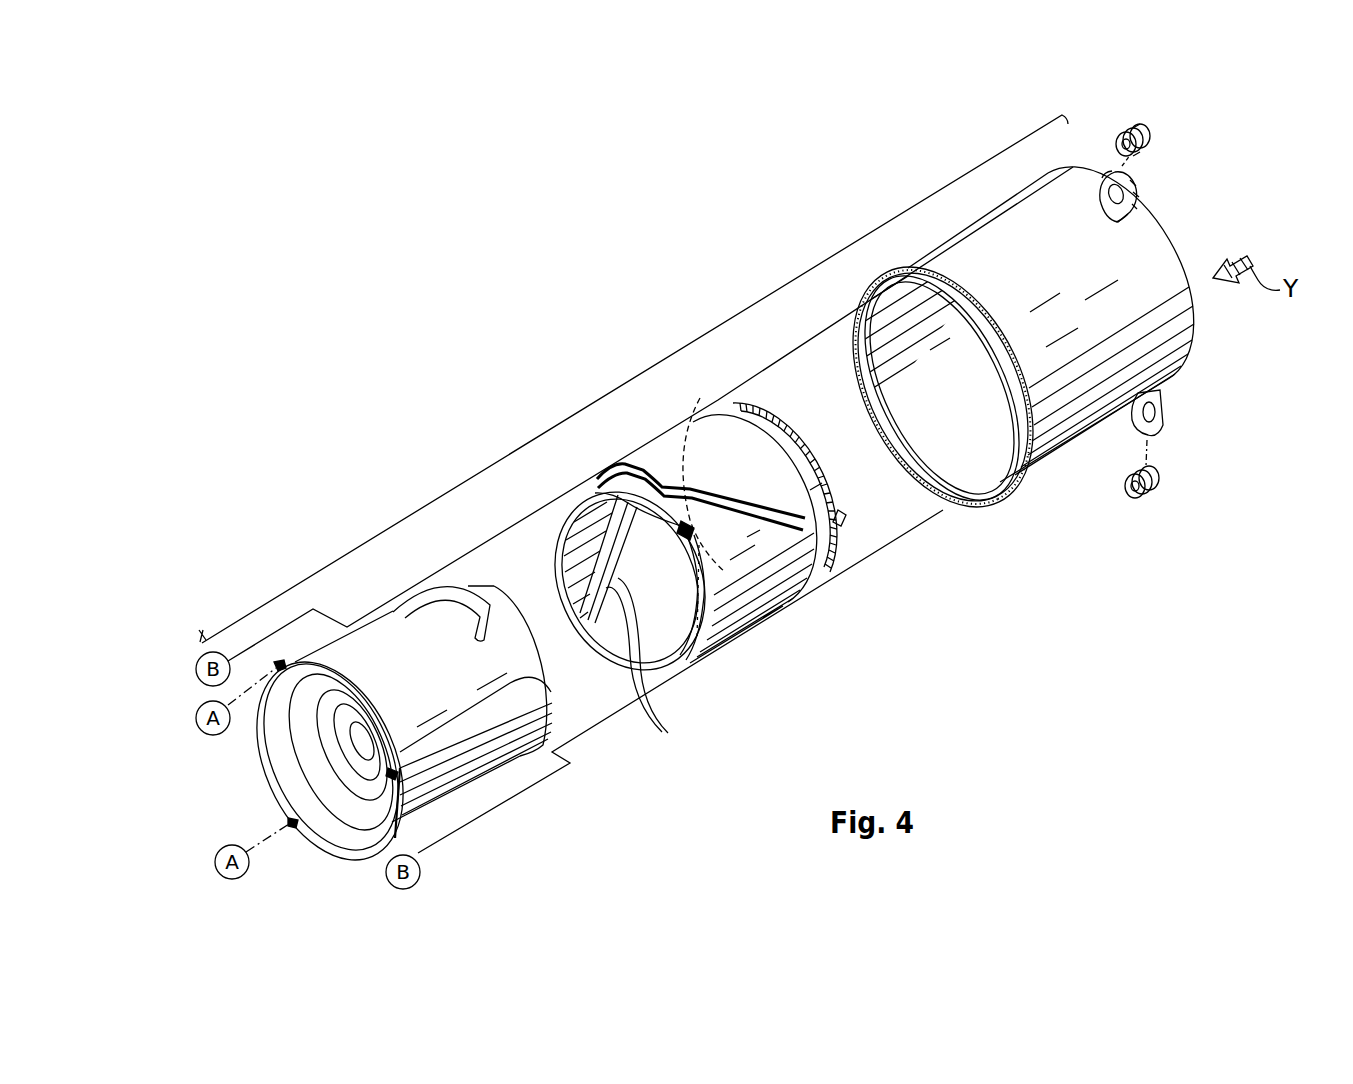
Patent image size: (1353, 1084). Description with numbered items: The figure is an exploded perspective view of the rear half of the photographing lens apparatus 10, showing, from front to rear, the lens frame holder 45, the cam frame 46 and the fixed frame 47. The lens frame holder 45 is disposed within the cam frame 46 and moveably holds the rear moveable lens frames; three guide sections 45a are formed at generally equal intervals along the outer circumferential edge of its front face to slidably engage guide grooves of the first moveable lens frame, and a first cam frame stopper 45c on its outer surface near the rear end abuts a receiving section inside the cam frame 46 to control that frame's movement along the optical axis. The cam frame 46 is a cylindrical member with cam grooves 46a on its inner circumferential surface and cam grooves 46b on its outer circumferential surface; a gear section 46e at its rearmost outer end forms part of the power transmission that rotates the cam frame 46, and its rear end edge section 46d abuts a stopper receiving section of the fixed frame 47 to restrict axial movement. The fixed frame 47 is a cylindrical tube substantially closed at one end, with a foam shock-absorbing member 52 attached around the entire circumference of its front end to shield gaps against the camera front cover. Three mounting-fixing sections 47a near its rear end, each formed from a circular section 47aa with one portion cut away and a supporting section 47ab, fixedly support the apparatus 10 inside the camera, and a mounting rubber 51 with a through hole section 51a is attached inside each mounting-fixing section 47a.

The photographing lens apparatus 10 is at (552, 429).
The lens frame holder 45 is at (540, 667).
The guide sections 45a is at (283, 665).
The first cam frame stopper 45c is at (516, 578).
The cam frame 46 is at (762, 595).
The cam grooves 46a is at (657, 462).
The cam grooves 46b is at (663, 666).
The rear end edge section 46d is at (803, 432).
The gear section 46e is at (843, 518).
The fixed frame 47 is at (1068, 410).
The mounting-fixing sections 47a is at (1163, 410).
The circular section 47aa is at (1137, 195).
The supporting section 47ab is at (1133, 206).
The mounting rubber 51 is at (1149, 135).
The through hole section 51a is at (1138, 150).
The shock-absorbing member 52 is at (957, 265).